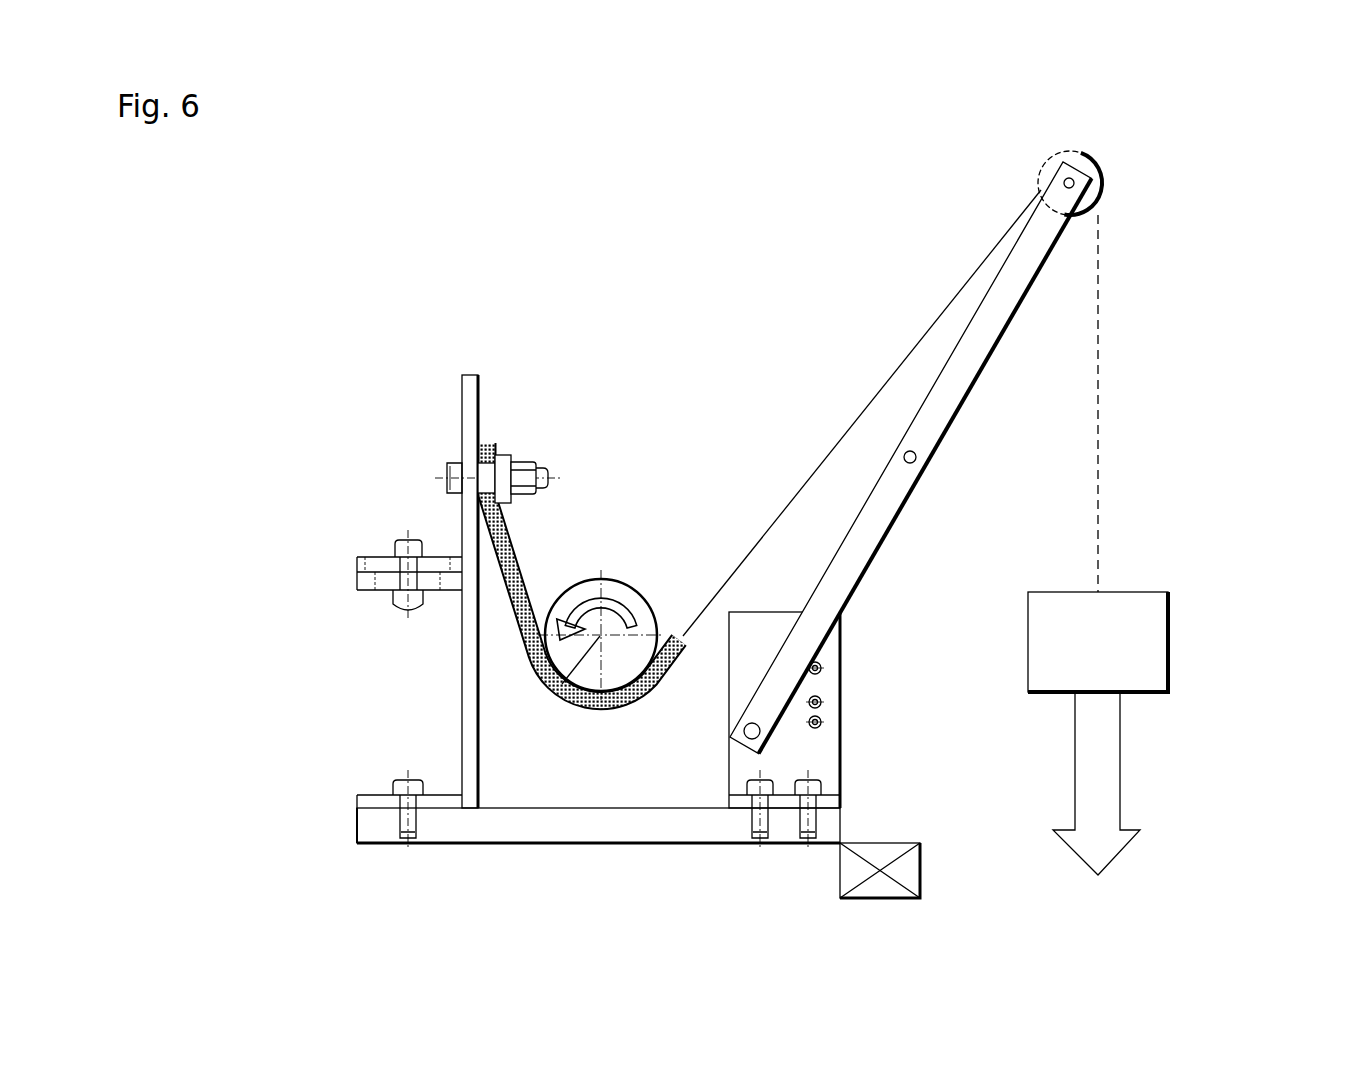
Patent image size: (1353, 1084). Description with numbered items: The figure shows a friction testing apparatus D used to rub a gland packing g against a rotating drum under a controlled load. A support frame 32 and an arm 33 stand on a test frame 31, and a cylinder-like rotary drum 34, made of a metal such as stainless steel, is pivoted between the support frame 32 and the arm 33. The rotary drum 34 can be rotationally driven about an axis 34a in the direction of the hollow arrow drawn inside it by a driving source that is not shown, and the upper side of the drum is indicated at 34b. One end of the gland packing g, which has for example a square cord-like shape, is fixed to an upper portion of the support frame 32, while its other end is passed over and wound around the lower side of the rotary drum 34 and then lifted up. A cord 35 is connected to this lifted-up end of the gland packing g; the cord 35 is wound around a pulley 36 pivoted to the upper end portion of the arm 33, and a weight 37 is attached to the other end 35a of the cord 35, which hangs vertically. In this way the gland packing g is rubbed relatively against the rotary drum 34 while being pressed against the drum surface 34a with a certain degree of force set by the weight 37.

The friction testing apparatus D is at (462, 303).
The test frame 31 is at (533, 832).
The support frame 32 is at (470, 666).
The arm 33 is at (949, 408).
The rotary drum 34 is at (641, 596).
The axis (surface) of the rotary drum 34a is at (553, 697).
The roller upper surface 34b is at (590, 580).
The cord 35 is at (893, 360).
The other end of the cord 35a is at (1100, 578).
The pulley 36 is at (1103, 178).
The weight 37 is at (1158, 662).
The gland packing g is at (520, 570).